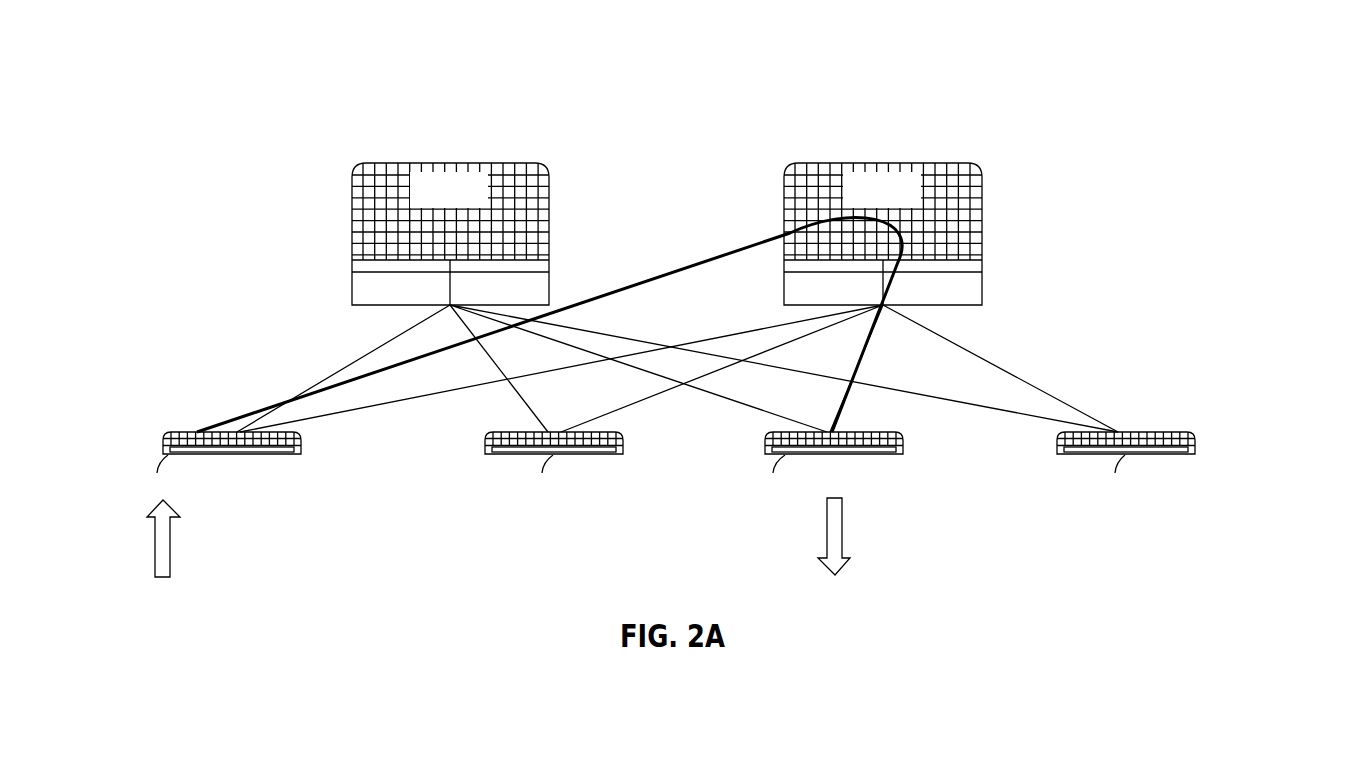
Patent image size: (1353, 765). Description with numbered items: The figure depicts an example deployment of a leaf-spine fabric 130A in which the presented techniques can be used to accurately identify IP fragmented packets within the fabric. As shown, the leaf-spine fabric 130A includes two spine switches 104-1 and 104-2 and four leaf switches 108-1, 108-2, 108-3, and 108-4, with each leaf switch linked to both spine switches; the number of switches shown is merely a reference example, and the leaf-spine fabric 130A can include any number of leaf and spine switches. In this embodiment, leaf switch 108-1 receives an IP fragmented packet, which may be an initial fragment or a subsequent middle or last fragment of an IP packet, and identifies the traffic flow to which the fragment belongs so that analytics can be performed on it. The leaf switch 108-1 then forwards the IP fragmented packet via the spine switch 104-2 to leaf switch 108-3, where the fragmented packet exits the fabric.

The leaf-spine fabric 130A is at (317, 81).
The spine switch 104-1 is at (550, 182).
The spine switch 104-2 is at (982, 182).
The leaf switch 108-1 is at (302, 452).
The leaf switch 108-2 is at (622, 452).
The leaf switch 108-3 is at (902, 452).
The leaf switch 108-4 is at (1193, 442).